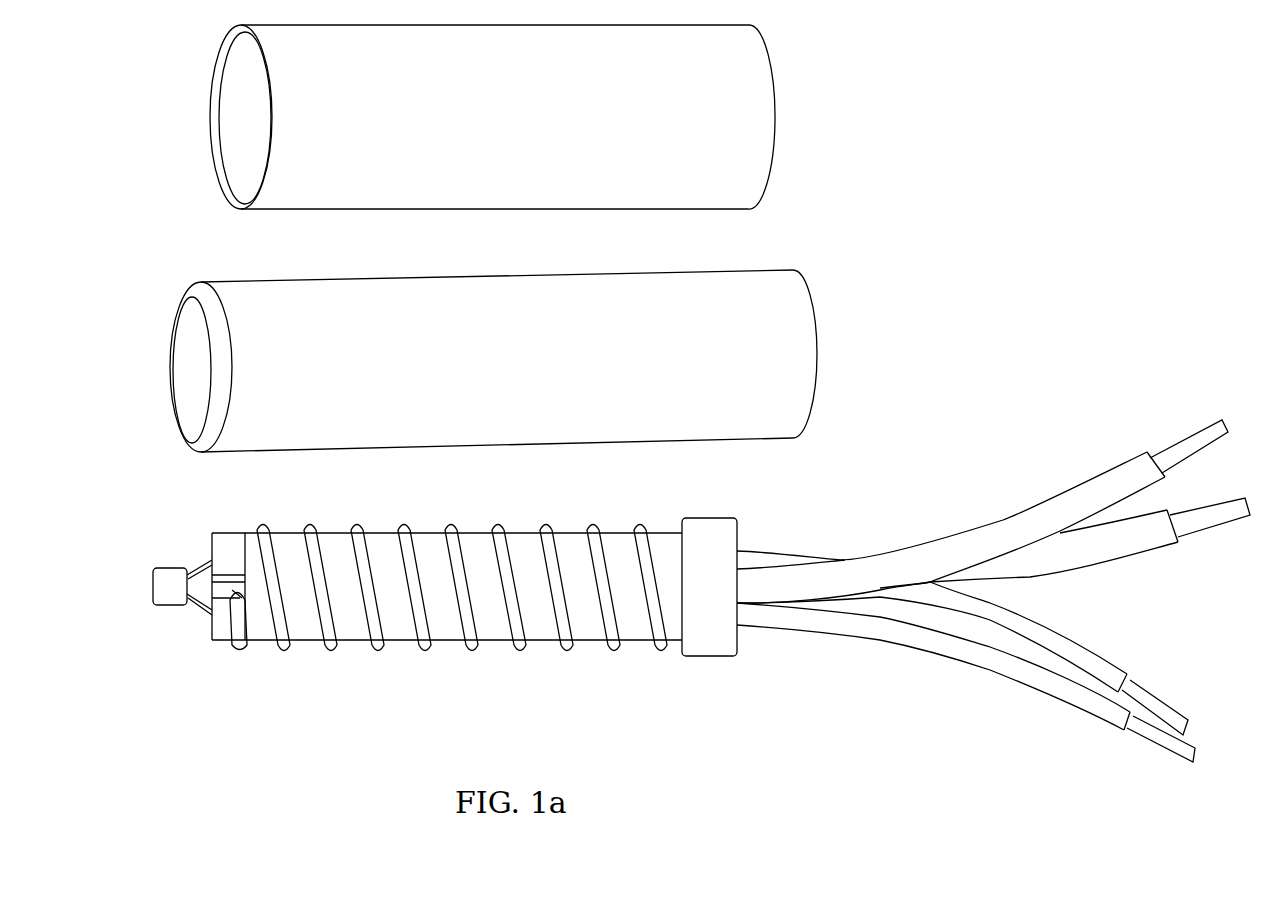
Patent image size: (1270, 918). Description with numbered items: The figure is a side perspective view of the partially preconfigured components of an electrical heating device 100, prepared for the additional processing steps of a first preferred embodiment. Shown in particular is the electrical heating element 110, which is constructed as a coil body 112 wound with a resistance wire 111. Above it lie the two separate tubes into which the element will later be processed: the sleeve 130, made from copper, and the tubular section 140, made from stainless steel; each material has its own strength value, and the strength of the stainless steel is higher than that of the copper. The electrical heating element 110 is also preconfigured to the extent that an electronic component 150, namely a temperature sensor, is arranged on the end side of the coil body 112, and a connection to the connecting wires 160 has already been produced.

The electrical heating device 100 is at (701, 597).
The electrical heating element 110 is at (592, 647).
The resistance wire 111 is at (660, 647).
The coil body 112 is at (528, 595).
The sleeve 130 is at (773, 393).
The tubular section 140 is at (722, 175).
The electronic component 150 is at (170, 582).
The connecting wires 160 is at (796, 583).